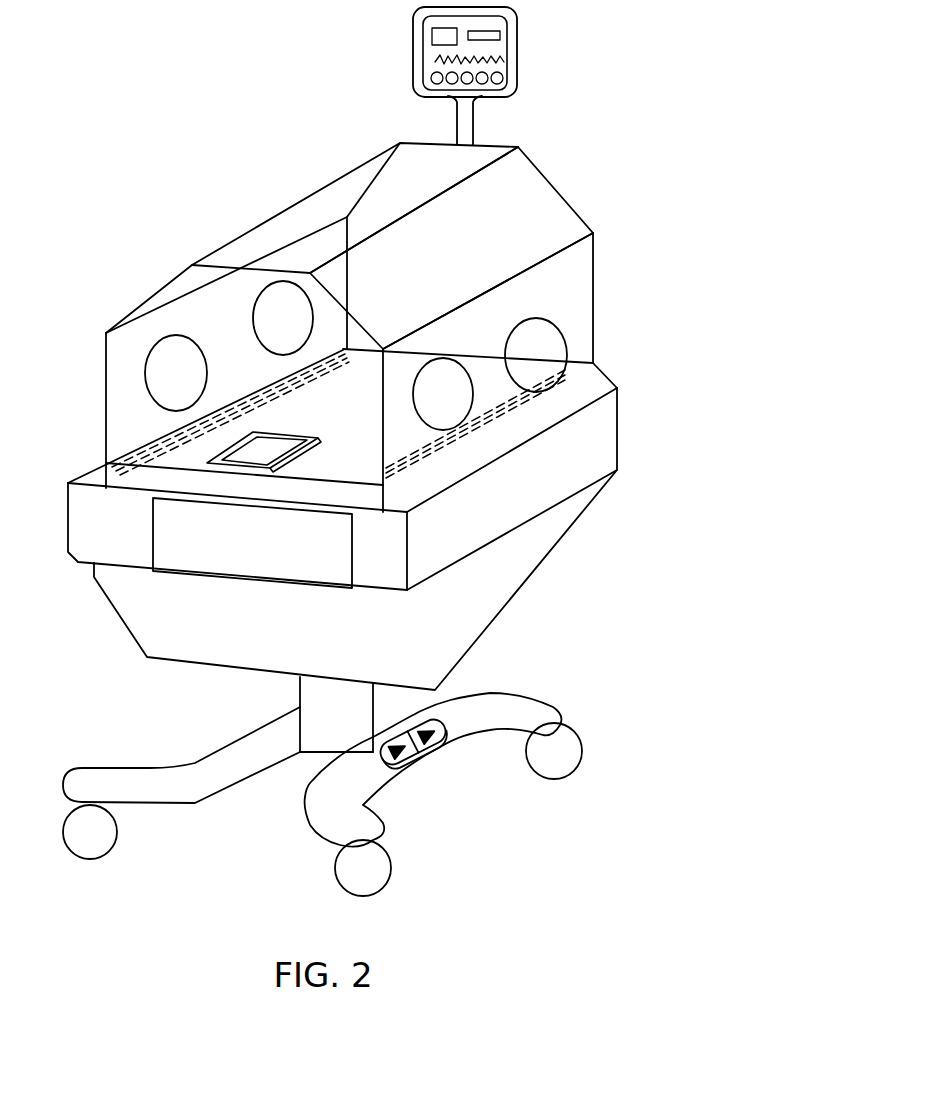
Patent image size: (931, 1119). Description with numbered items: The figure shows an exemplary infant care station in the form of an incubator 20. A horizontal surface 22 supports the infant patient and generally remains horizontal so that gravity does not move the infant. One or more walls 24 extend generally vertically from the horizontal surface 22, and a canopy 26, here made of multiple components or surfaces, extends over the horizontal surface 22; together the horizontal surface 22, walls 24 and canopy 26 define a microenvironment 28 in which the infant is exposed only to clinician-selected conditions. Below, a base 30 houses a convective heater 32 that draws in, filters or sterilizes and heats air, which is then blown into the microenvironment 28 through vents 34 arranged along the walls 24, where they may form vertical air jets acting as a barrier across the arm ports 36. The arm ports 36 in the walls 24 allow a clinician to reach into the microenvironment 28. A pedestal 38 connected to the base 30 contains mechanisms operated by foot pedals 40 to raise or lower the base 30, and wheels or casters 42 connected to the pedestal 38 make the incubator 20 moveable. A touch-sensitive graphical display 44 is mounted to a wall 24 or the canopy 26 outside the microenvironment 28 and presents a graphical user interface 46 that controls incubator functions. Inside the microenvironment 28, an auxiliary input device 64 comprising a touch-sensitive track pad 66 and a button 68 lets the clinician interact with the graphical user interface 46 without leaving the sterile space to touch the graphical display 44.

The incubator 20 is at (615, 256).
The horizontal surface 22 is at (113, 465).
The walls 24 is at (210, 298).
The canopy 26 is at (313, 210).
The microenvironment 28 is at (393, 283).
The base 30 is at (310, 638).
The convective heater 32 is at (180, 548).
The vents 34 is at (250, 397).
The arm ports 36 is at (163, 386).
The pedestal 38 is at (310, 697).
The foot pedals 40 is at (425, 770).
The wheels or casters 42 is at (570, 760).
The graphical display 44 is at (517, 38).
The graphical user interface 46 is at (515, 67).
The auxiliary input device 64 is at (285, 441).
The touch-sensitive track pad 66 is at (262, 446).
The button 68 is at (300, 460).